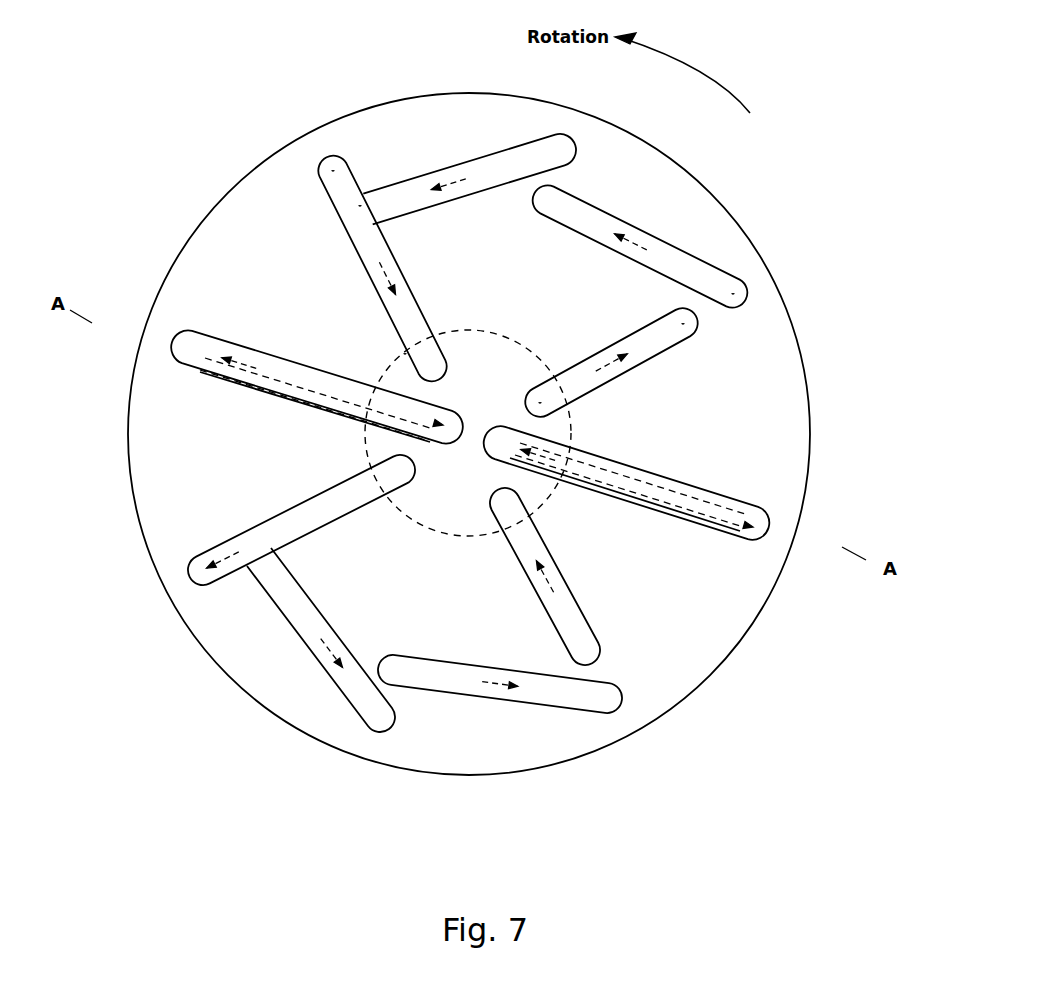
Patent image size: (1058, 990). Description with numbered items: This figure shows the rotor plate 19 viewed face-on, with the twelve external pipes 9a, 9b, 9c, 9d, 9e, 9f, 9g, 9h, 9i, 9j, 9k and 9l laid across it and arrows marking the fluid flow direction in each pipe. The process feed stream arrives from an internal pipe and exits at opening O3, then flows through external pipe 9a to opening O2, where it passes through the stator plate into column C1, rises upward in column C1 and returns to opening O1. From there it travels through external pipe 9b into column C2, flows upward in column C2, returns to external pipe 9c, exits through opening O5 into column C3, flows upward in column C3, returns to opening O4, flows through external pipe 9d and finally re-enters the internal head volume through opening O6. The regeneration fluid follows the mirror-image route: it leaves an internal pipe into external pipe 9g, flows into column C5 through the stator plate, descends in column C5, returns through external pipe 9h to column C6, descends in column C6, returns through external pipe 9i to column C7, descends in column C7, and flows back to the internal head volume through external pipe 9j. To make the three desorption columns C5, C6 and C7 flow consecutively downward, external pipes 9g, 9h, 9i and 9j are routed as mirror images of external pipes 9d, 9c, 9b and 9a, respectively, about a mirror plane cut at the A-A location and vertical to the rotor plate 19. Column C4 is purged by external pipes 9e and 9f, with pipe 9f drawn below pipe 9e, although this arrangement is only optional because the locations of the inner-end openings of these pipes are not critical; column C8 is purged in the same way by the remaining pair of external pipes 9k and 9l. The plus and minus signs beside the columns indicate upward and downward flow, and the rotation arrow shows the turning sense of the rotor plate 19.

The rotor plate 19 is at (743, 226).
The external pipe 9a is at (642, 368).
The external pipe 9b is at (682, 243).
The external pipe 9c is at (447, 163).
The external pipe 9d is at (350, 245).
The external pipe 9e is at (217, 337).
The external pipe 9f is at (262, 390).
The external pipe 9g is at (275, 510).
The external pipe 9h is at (300, 647).
The external pipe 9i is at (524, 708).
The external pipe 9j is at (588, 618).
The external pipe 9k is at (655, 512).
The external pipe 9l is at (730, 497).
The opening O1 is at (737, 295).
The opening O2 is at (690, 323).
The opening O3 is at (543, 403).
The opening O4 is at (330, 167).
The opening O5 is at (360, 208).
The opening O6 is at (405, 353).
The column C1 is at (787, 257).
The column C2 is at (570, 78).
The column C3 is at (300, 102).
The column C4 is at (115, 315).
The desorption column C5 is at (128, 601).
The desorption column C6 is at (350, 793).
The desorption column C7 is at (630, 771).
The column C8 is at (818, 534).